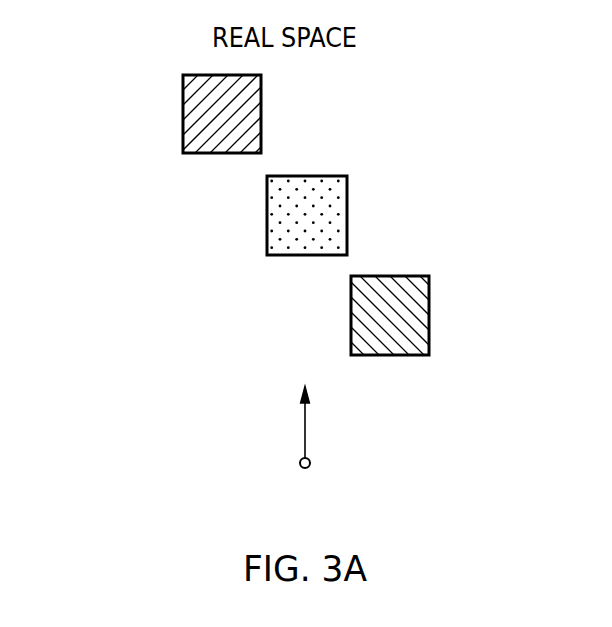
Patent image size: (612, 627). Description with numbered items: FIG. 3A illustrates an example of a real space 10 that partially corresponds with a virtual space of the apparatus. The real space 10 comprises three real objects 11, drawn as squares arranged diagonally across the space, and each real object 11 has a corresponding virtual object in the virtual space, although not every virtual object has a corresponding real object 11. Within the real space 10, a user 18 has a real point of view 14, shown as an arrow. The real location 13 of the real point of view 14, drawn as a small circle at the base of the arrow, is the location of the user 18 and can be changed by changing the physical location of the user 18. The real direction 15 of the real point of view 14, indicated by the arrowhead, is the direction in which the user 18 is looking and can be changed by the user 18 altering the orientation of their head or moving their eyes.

The real space 10 is at (118, 113).
The real object 11 is at (262, 117).
The real location 13 is at (305, 469).
The real point of view 14 is at (306, 432).
The real direction 15 is at (304, 410).
The user 18 is at (256, 475).